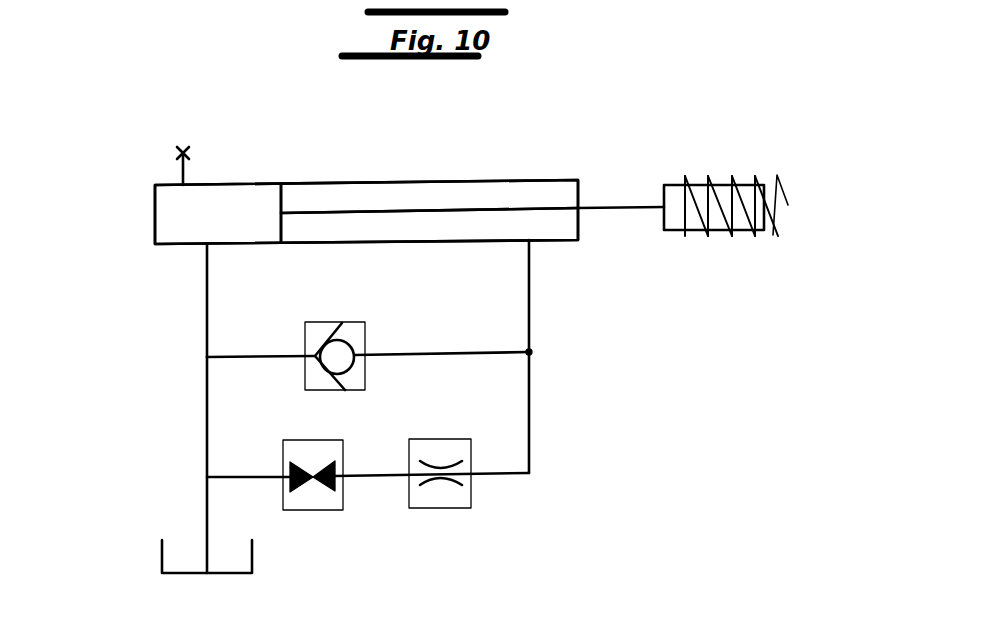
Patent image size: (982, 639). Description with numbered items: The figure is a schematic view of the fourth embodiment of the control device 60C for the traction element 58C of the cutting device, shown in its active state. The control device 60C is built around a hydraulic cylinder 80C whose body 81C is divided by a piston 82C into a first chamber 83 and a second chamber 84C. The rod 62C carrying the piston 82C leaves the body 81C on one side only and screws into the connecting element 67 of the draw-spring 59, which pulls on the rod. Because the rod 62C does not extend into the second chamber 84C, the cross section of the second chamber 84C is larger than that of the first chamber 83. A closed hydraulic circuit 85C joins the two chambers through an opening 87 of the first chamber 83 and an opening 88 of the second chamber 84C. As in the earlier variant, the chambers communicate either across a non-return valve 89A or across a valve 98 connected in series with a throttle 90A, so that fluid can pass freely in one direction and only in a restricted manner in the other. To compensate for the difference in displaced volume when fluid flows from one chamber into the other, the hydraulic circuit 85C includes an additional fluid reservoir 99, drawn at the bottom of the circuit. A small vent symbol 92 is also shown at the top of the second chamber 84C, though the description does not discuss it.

The traction element 58C is at (713, 168).
The draw-spring 59 is at (776, 177).
The control device 60C is at (157, 245).
The rod 62C is at (610, 205).
The connecting element 67 is at (738, 230).
The hydraulic cylinder 80C is at (450, 178).
The body 81C is at (355, 180).
The piston 82C is at (277, 198).
The first chamber 83 is at (525, 187).
The second chamber 84C is at (167, 215).
The hydraulic circuit 85C is at (205, 333).
The opening 87 is at (527, 240).
The opening 88 is at (213, 245).
The non-return valve 89A is at (338, 343).
The throttle 90A is at (440, 480).
The vent 92 is at (183, 145).
The valve 98 is at (313, 482).
The fluid reservoir 99 is at (162, 550).